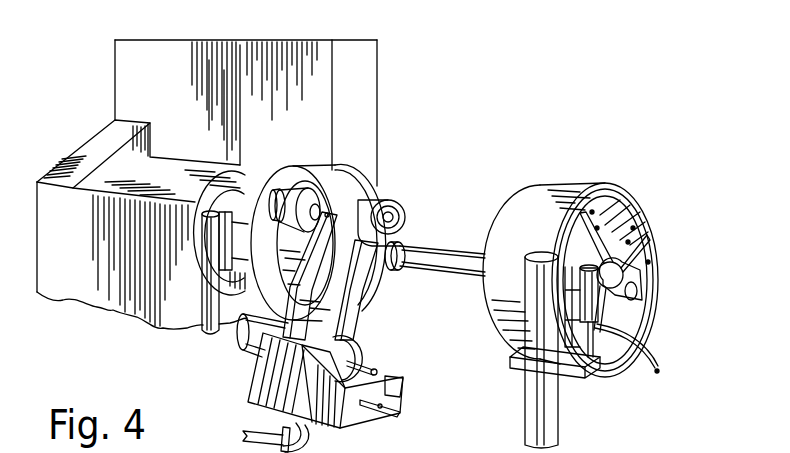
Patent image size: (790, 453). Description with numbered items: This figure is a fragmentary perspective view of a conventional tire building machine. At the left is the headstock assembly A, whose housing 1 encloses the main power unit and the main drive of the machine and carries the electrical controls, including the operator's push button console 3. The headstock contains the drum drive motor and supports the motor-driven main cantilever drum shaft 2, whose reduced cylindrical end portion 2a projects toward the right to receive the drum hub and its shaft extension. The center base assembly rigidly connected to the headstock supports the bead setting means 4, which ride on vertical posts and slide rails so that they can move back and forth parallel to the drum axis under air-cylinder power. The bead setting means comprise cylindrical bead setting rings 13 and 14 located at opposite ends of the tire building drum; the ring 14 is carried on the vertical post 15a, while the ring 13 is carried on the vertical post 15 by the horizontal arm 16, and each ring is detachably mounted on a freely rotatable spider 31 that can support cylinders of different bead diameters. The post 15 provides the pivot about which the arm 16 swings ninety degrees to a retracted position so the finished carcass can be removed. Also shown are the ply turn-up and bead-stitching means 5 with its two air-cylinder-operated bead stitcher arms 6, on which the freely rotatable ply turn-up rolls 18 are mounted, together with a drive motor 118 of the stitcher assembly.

The headstock assembly A is at (103, 99).
The housing 1 is at (202, 40).
The operator's push button console 3 is at (368, 75).
The cylindrical bead setting ring 14 is at (312, 165).
The ply turn-up rolls 18 is at (295, 190).
The bead stitcher arms 6 is at (312, 269).
The reduced cylindrical end portion 2a is at (463, 250).
The drum shaft 2 is at (384, 266).
The cylindrical bead setting ring 13 is at (570, 185).
The inner bead setting means 4 is at (630, 190).
The freely rotatable spider 31 is at (650, 264).
The horizontal arm 16 is at (643, 316).
The vertical post 15 is at (523, 420).
The vertical post 15a is at (203, 300).
The ply turn-up and bead-stitching means 5 is at (238, 357).
The drive motor 118 is at (257, 385).